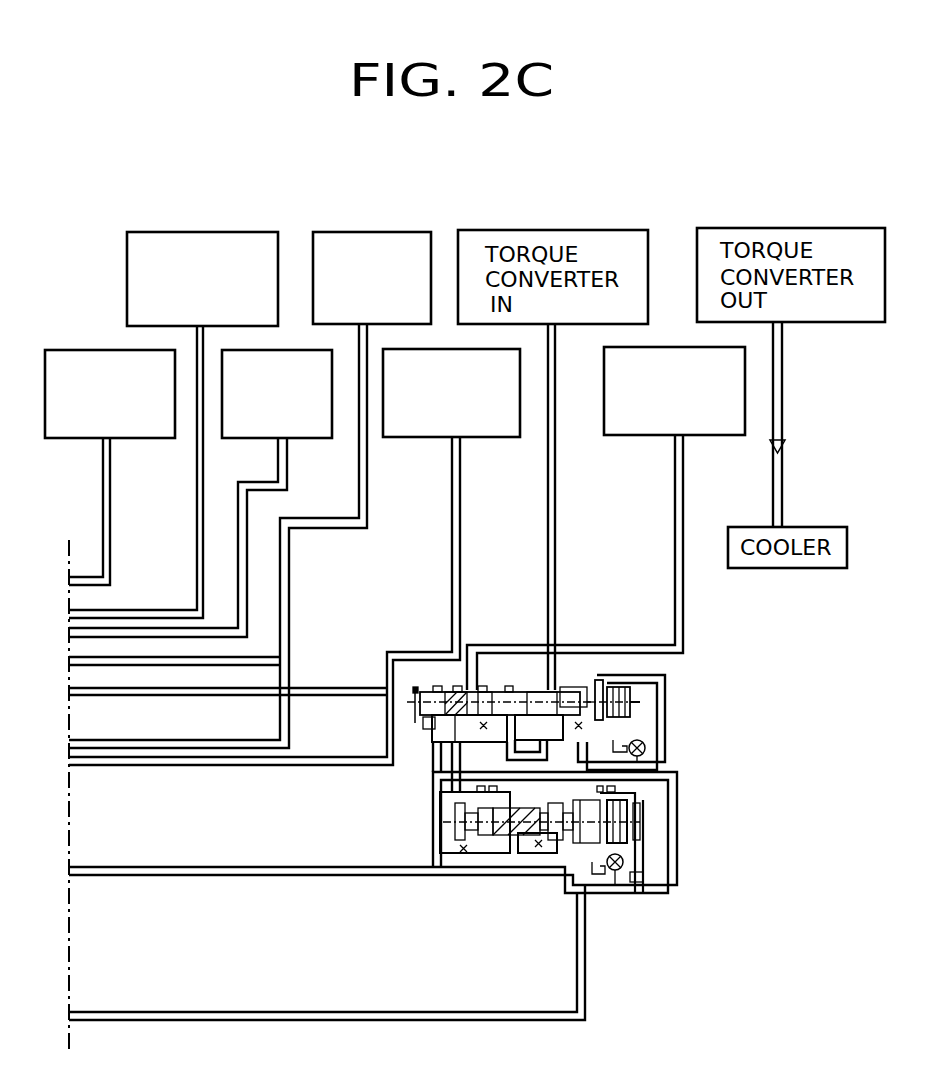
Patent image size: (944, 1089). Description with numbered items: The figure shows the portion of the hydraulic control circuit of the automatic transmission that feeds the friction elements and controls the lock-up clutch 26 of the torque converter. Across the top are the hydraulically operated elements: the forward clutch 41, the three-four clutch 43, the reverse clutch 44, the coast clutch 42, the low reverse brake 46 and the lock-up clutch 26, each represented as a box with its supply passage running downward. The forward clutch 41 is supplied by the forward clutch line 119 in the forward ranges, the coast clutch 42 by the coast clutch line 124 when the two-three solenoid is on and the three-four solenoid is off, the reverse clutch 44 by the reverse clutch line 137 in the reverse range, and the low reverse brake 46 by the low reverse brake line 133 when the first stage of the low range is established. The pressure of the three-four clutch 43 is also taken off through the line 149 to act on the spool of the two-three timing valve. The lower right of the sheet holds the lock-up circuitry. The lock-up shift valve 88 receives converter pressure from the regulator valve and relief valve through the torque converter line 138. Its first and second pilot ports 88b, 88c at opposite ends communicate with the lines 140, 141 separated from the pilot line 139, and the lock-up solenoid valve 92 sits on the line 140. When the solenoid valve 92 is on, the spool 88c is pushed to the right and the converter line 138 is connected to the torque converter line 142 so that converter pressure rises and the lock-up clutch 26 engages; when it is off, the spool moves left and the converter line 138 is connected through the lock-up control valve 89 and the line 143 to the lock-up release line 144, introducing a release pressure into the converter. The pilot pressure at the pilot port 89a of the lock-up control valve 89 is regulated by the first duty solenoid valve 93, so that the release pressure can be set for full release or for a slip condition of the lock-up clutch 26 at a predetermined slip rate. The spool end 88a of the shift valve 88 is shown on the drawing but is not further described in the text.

The forward clutch 41 is at (207, 232).
The 3-4 clutch 43 is at (361, 232).
The reverse clutch 44 is at (95, 350).
The coast clutch 42 is at (292, 438).
The low reverse brake 46 is at (433, 437).
The lock-up clutch 26 is at (647, 435).
The reverse clutch line 137 is at (110, 510).
The forward clutch line 119 is at (197, 557).
The coast clutch line 124 is at (278, 490).
The line 149 is at (350, 528).
The low reverse brake line 133 is at (460, 515).
The torque converter line 142 is at (556, 547).
The lock-up release line 144 is at (723, 503).
The lock-up shift valve 88 is at (533, 690).
The second pilot port 88c is at (565, 687).
The lock-up control valve spool end 88a is at (607, 666).
The first pilot port 88b is at (433, 722).
The line 140 is at (662, 707).
The lock-up solenoid valve 92 is at (640, 740).
The line 141 is at (440, 747).
The line 143 is at (457, 783).
The lock-up control valve 89 is at (628, 810).
The pilot port 89a is at (608, 800).
The first duty solenoid valve 93 is at (615, 872).
The pilot line 139 is at (200, 867).
The torque converter line 138 is at (420, 1012).